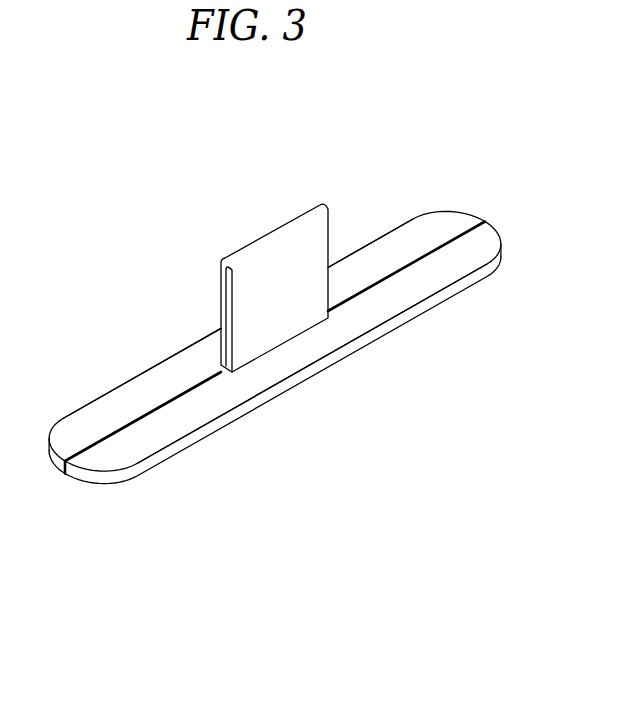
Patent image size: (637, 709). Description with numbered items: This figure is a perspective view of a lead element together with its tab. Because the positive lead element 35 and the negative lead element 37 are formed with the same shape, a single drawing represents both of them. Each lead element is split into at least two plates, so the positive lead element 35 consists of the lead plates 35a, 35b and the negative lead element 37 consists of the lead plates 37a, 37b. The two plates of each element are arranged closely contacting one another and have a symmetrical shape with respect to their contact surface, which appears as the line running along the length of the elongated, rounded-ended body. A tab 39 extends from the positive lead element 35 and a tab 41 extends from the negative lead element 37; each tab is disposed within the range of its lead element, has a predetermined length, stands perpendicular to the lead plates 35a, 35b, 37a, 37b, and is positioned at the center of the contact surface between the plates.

The positive lead element 35 is at (291, 316).
The negative lead element 37 is at (291, 316).
The lead plate 35a is at (162, 382).
The lead plate 37a is at (272, 340).
The lead plate 35b is at (202, 413).
The lead plate 37b is at (312, 381).
The tab 39 is at (273, 243).
The tab 41 is at (270, 274).